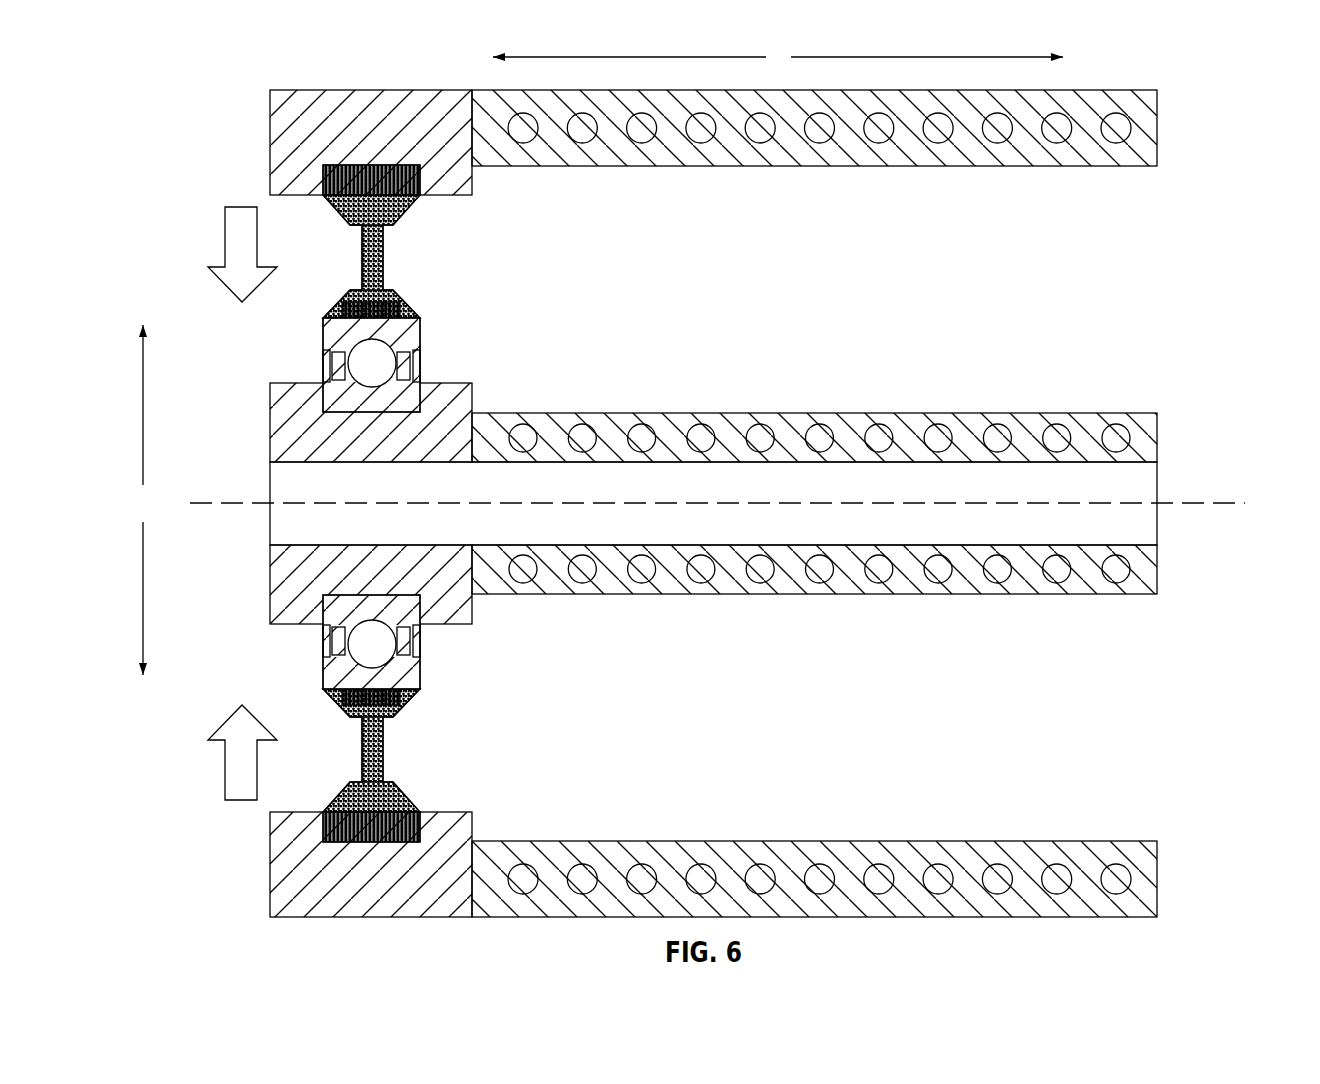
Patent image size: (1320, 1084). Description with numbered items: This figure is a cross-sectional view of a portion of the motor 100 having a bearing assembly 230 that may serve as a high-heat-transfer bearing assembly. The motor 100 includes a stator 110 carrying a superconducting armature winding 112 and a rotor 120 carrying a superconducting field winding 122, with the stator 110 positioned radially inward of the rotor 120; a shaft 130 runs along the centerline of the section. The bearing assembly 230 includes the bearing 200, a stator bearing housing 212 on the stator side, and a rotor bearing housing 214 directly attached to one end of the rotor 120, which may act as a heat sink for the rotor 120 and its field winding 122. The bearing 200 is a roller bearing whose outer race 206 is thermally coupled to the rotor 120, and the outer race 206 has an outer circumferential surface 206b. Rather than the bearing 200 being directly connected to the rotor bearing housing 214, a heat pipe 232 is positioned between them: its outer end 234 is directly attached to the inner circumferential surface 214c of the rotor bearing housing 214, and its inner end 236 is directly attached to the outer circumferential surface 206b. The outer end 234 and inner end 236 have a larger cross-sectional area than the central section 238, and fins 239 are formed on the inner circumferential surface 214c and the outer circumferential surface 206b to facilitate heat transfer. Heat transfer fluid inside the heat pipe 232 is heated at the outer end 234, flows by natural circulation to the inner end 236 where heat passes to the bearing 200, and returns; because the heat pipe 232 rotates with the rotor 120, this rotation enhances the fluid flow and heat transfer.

The motor 100 is at (717, 478).
The stator 110 is at (1149, 440).
The armature winding 112 is at (1117, 440).
The rotor 120 is at (1150, 140).
The field winding 122 is at (1119, 128).
The shaft 130 is at (1140, 490).
The bearing 200 is at (338, 678).
The outer race 206 is at (369, 503).
The outer circumferential surface 206b is at (405, 312).
The stator bearing housing 212 is at (466, 418).
The rotor bearing housing 214 is at (301, 121).
The inner circumferential surface 214c is at (352, 176).
The bearing assembly 230 is at (212, 199).
The heat pipe 232 is at (387, 503).
The outer end 234 is at (414, 208).
The inner end 236 is at (414, 300).
The central section 238 is at (388, 247).
The fins 239 is at (398, 170).